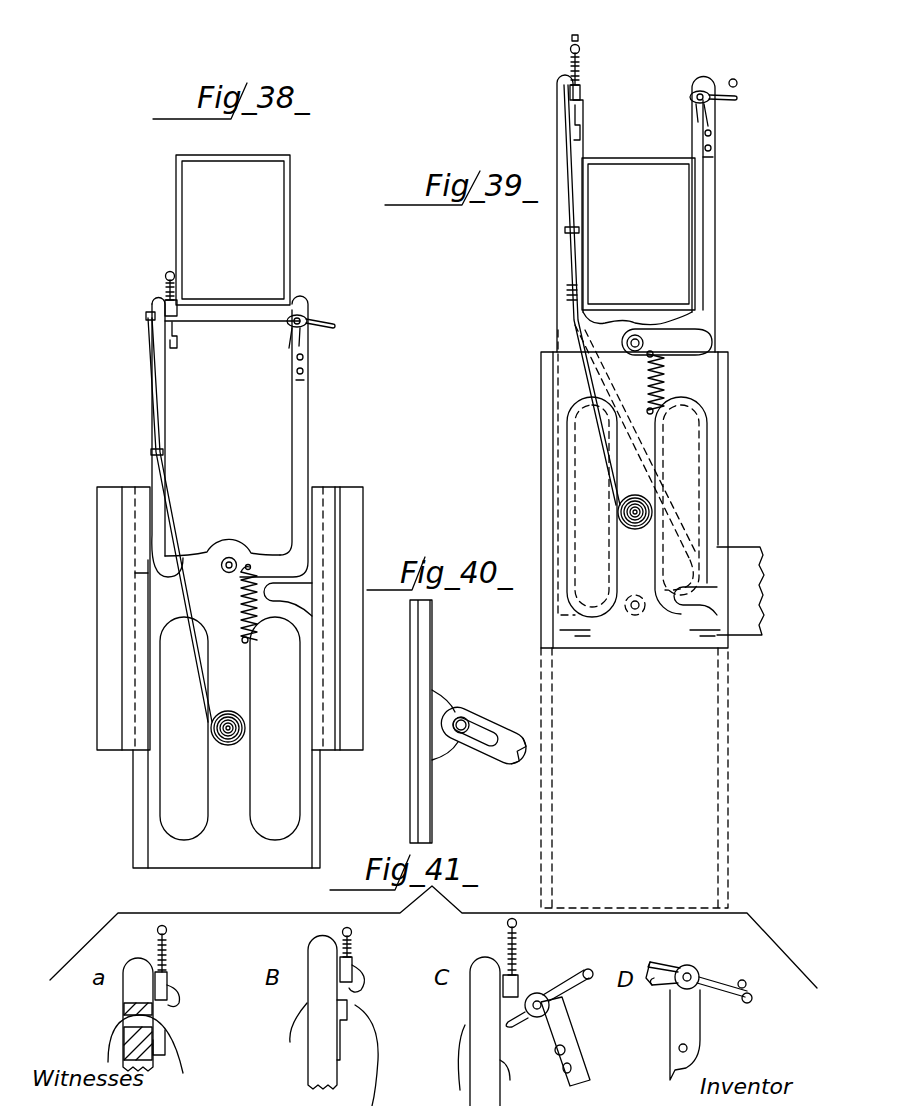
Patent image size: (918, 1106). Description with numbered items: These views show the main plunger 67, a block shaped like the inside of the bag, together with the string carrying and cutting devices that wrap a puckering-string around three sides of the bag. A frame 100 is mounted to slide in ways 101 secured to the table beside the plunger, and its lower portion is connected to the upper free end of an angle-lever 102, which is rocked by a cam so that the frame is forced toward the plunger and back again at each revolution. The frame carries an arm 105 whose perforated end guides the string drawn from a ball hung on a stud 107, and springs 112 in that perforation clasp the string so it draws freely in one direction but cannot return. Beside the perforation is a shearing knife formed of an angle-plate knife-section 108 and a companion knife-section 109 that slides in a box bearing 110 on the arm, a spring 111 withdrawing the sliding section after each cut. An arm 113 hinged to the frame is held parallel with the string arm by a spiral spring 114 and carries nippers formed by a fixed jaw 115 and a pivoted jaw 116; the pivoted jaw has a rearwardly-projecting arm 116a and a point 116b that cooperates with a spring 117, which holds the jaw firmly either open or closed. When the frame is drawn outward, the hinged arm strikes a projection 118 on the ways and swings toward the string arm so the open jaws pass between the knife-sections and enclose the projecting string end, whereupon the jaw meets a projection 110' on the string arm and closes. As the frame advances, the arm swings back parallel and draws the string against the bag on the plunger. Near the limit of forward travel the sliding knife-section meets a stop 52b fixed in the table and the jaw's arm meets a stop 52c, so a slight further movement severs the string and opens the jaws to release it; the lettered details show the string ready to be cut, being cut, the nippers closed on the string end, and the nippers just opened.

In FIG. 38, the main plunger 67 is at (233, 230).
In FIG. 39, the main plunger 67 is at (638, 234).
In FIG. 38, the frame 100 is at (230, 735).
In FIG. 39, the frame 100 is at (634, 503).
In FIG. 40, the frame 100 is at (422, 660).
In FIG. 38, the ways 101 is at (115, 587).
In FIG. 39, the ways 101 is at (740, 591).
In FIG. 40, the angle-lever 102 is at (514, 748).
In FIG. 38, the arm 105 is at (167, 398).
In FIG. 39, the arm 105 is at (563, 258).
In FIG. 41, the arm 105 is at (135, 968).
In FIG. 38, the stud 107 is at (211, 730).
In FIG. 39, the stud 107 is at (618, 517).
In FIG. 38, the knife-section 108 is at (178, 346).
In FIG. 39, the knife-section 108 is at (583, 123).
In FIG. 41, the knife-section 108 is at (170, 1045).
In FIG. 41, the knife-section 109 is at (376, 1008).
In FIG. 41, the box bearing 110 is at (336, 976).
In FIG. 41, the projection 110' is at (291, 990).
In FIG. 38, the spring 111 is at (163, 281).
In FIG. 39, the spring 111 is at (570, 53).
In FIG. 41, the spring 111 is at (166, 942).
In FIG. 41, the springs 112 is at (126, 1010).
In FIG. 38, the arm 113 is at (305, 414).
In FIG. 39, the arm 113 is at (711, 226).
In FIG. 41, the arm 113 is at (588, 1080).
In FIG. 38, the spiral spring 114 is at (262, 576).
In FIG. 39, the spiral spring 114 is at (665, 382).
In FIG. 41, the fixed jaw 115 is at (661, 987).
In FIG. 39, the pivoted jaw 116 is at (699, 92).
In FIG. 41, the pivoted jaw 116 is at (672, 966).
In FIG. 38, the rearwardly-projecting arm 116a is at (312, 324).
In FIG. 41, the rearwardly-projecting arm 116a is at (572, 980).
In FIG. 41, the point 116b is at (695, 968).
In FIG. 41, the spring 117 is at (570, 1042).
In FIG. 38, the projection 118 is at (283, 590).
In FIG. 39, the projection 118 is at (697, 597).
In FIG. 39, the stop 52b is at (580, 35).
In FIG. 39, the stop 52c is at (738, 80).
In FIG. 41, the stop 52c is at (764, 976).